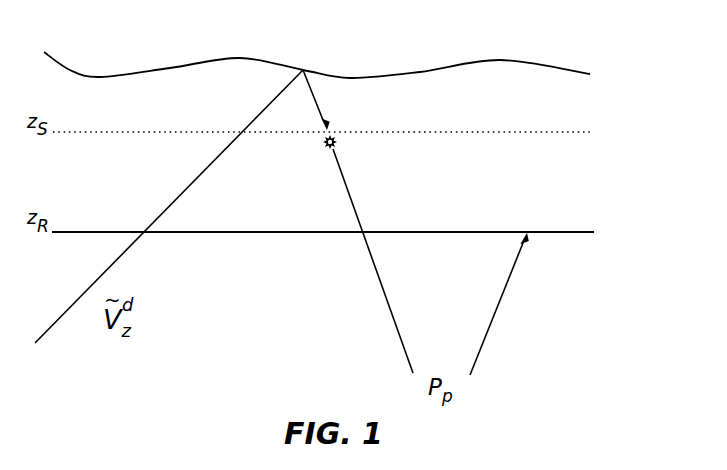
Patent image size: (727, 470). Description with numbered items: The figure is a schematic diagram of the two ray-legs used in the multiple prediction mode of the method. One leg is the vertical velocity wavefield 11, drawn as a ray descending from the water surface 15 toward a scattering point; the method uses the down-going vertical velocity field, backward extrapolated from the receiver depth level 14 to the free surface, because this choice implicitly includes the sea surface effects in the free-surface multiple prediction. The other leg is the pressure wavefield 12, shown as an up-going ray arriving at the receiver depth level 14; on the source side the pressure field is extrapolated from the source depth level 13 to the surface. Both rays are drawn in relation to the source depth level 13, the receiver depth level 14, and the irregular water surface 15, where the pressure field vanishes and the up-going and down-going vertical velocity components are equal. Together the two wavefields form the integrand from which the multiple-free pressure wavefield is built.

The vertical velocity wavefield 11 is at (322, 108).
The pressure wavefield 12 is at (488, 333).
The source depth level 13 is at (530, 135).
The receiver depth level 14 is at (577, 235).
The water surface 15 is at (222, 58).